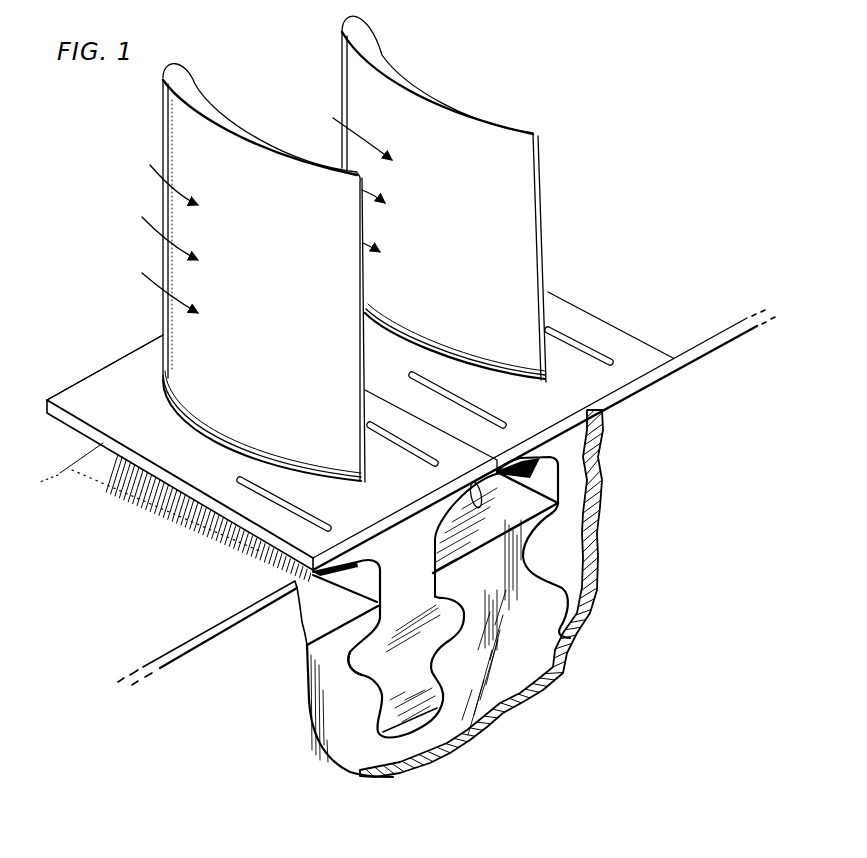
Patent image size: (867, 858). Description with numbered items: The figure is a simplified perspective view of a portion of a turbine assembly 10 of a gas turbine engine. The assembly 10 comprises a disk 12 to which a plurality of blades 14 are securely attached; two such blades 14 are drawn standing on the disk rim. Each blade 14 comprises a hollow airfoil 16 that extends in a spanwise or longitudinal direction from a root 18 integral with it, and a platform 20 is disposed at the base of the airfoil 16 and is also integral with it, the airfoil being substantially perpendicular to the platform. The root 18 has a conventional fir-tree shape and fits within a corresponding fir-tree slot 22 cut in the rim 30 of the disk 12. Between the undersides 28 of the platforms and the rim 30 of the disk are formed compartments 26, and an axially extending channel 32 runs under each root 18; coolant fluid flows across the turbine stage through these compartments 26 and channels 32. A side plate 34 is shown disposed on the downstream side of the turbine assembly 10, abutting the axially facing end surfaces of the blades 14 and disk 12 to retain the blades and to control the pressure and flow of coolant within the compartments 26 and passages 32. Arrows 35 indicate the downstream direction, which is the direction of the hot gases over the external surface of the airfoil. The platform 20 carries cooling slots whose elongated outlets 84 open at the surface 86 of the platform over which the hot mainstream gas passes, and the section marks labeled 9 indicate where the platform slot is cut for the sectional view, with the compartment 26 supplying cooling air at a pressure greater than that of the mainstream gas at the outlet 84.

The turbine assembly 10 is at (600, 150).
The disk 12 is at (472, 591).
The blade 14 is at (549, 234).
The hollow airfoil 16 is at (290, 324).
The root 18 is at (418, 681).
The platform 20 is at (640, 354).
The fir-tree slot 22 is at (365, 676).
The compartment 26 is at (467, 533).
The underside of the platform 28 is at (477, 497).
The rim of the disk 30 is at (533, 513).
The axially extending channel 32 is at (413, 727).
The side plate 34 is at (647, 444).
The arrows 35 is at (150, 172).
The elongated outlet 84 is at (593, 356).
The surface of the platform 86 is at (107, 381).
The section line 9- 9 is at (278, 502).